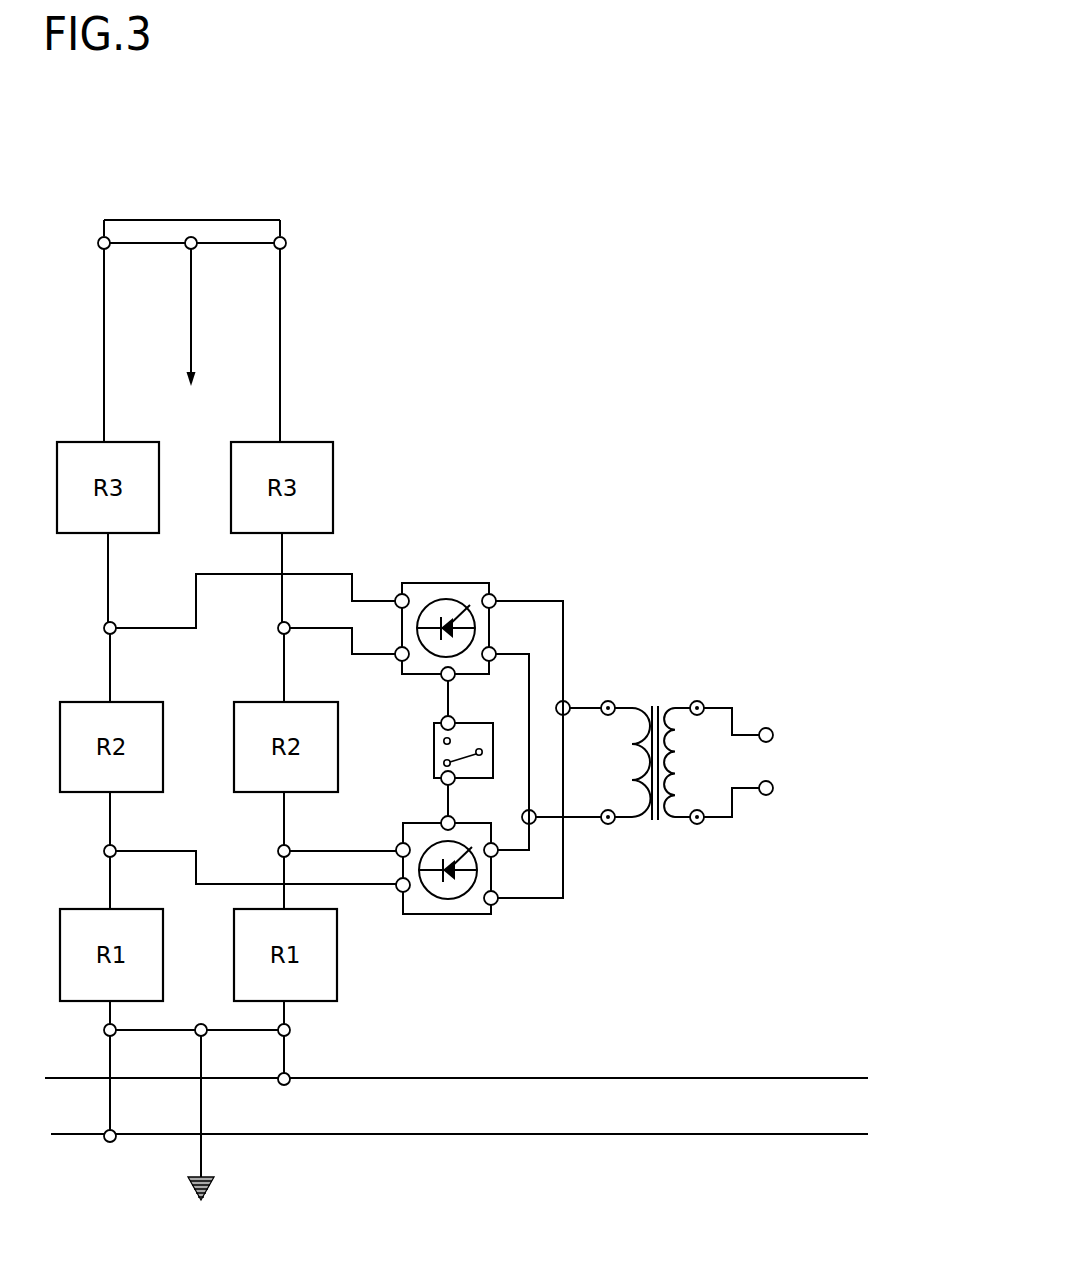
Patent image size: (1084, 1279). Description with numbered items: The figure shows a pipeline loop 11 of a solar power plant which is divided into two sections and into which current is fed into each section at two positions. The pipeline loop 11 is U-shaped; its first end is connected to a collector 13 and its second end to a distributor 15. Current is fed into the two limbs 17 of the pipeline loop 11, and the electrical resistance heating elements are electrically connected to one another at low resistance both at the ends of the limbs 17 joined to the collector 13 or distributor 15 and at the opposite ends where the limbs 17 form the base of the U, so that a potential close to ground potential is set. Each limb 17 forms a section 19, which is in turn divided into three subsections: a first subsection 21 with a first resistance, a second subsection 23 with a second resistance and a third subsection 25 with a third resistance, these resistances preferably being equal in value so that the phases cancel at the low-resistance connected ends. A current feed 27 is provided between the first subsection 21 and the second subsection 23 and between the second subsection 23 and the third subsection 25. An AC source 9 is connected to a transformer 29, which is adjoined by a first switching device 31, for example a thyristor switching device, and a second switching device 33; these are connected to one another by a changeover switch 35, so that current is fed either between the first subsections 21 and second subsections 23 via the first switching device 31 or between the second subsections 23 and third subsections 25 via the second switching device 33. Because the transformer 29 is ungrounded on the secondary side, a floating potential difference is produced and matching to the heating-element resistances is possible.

The AC source 9 is at (778, 716).
The pipeline loop 11 is at (282, 291).
The collector 13 is at (595, 1077).
The distributor 15 is at (613, 1135).
The limb 17 is at (88, 312).
The section 19 is at (295, 336).
The first subsection 21 is at (110, 890).
The second subsection 23 is at (110, 686).
The third subsection 25 is at (108, 562).
The current feed 27 is at (104, 628).
The transformer 29 is at (648, 698).
The first switching device 31 is at (460, 914).
The second switching device 33 is at (447, 582).
The changeover switch 35 is at (434, 768).